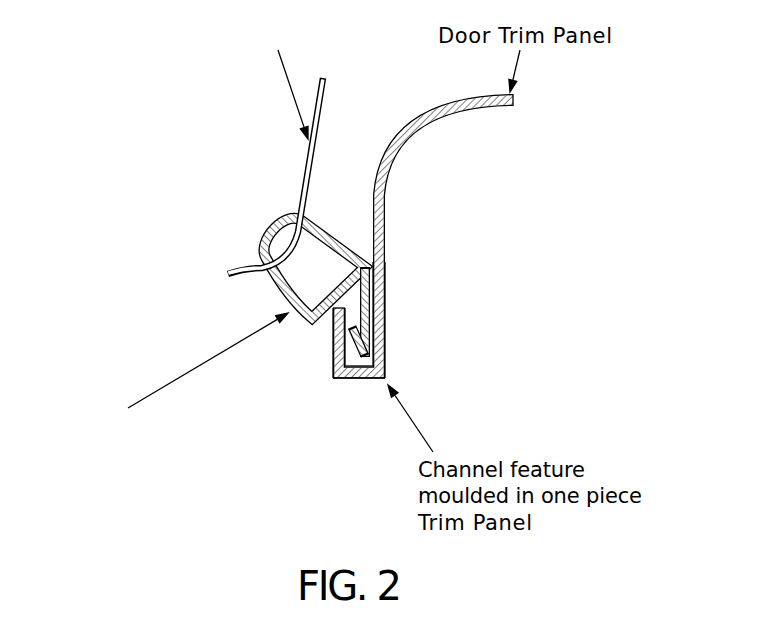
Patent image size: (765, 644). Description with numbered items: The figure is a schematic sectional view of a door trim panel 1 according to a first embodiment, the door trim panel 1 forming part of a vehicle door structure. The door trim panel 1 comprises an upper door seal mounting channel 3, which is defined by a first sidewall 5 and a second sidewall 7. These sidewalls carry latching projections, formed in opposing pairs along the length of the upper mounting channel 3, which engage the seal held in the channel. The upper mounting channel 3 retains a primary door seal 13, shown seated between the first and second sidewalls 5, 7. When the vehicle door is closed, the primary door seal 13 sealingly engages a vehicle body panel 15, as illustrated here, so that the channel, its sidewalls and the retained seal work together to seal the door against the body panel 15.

The door trim panel 1 is at (447, 309).
The upper door seal mounting channel 3 is at (334, 398).
The first sidewall 5 is at (384, 336).
The second sidewall 7 is at (334, 357).
The primary door seal 13 is at (203, 355).
The vehicle body panel 15 is at (308, 165).